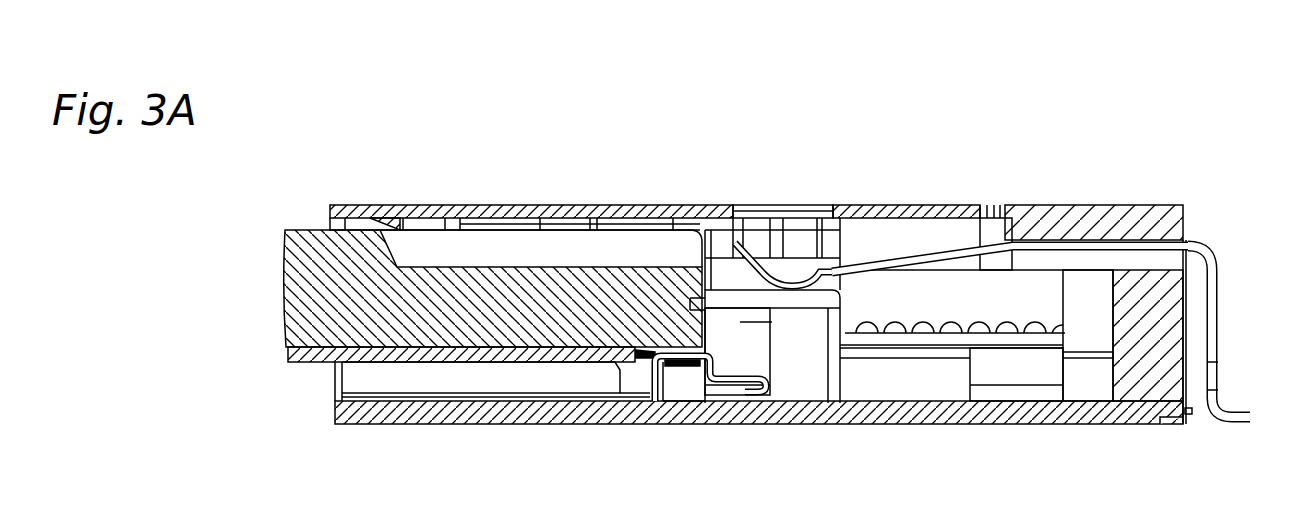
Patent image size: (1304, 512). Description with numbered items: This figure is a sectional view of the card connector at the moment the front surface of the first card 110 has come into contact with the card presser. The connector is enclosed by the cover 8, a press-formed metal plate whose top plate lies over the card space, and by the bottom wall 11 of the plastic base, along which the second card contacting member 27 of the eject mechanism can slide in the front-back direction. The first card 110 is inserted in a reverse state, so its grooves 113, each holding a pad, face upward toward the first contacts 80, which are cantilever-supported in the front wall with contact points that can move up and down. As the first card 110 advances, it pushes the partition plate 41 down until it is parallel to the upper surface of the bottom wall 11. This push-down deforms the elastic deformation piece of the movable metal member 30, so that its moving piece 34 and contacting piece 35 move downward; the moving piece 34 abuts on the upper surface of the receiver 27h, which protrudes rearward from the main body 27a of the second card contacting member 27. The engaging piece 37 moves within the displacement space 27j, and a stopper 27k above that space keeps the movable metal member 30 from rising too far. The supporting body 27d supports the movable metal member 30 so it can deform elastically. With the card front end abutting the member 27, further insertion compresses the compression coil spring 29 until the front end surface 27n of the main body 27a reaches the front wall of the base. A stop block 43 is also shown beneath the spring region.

The cover 8 is at (488, 207).
The groove 113 is at (397, 240).
The first card 110 is at (283, 268).
The partition plate 41 is at (288, 347).
The bottom wall 11 is at (1093, 420).
The supporting body 27d is at (370, 380).
The compression coil spring 29 is at (1042, 330).
The second card contacting member 27 is at (766, 320).
The movable metal member 30 is at (728, 350).
The engaging piece 37 is at (740, 385).
The stopper 27k is at (758, 322).
The main body 27a is at (803, 315).
The first contact 80 is at (930, 243).
The displacement space 27j is at (758, 345).
The front end surface 27n is at (842, 368).
The stop block 43 is at (1013, 392).
The contacting piece 35 is at (647, 390).
The moving piece 34 is at (678, 392).
The receiver 27h is at (713, 390).